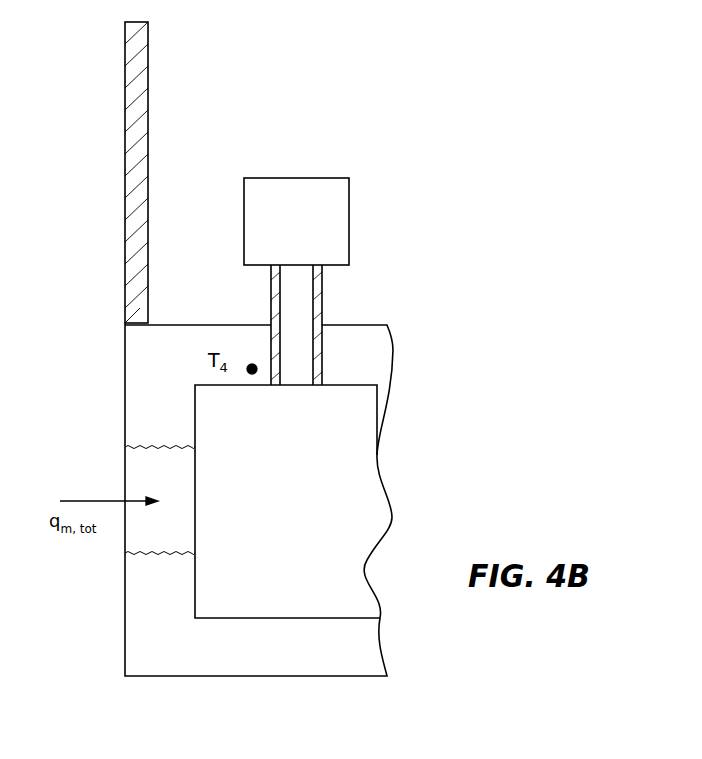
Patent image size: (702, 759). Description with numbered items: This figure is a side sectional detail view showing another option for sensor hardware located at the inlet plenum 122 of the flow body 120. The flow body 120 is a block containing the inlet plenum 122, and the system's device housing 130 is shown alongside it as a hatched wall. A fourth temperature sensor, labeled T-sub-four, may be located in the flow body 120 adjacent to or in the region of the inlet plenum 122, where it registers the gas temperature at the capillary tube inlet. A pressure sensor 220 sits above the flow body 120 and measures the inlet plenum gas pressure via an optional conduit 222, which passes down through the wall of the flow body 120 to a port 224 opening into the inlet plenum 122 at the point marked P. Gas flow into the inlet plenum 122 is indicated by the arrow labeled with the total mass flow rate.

The device housing 130 is at (125, 161).
The flow body block 120 is at (363, 353).
The inlet plenum 122 is at (225, 580).
The pressure sensor 220 is at (362, 210).
The conduit 222 is at (322, 299).
The port 224 is at (303, 386).